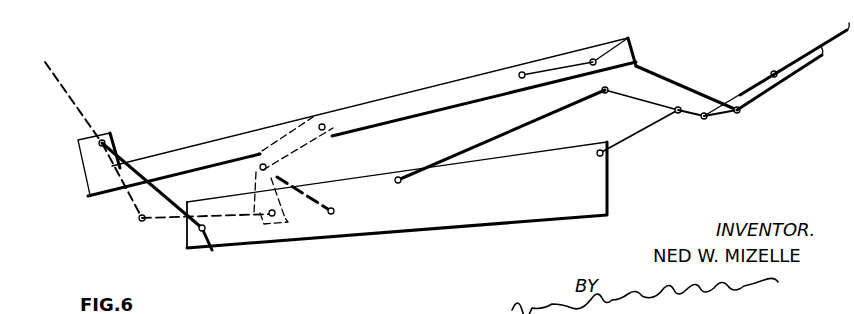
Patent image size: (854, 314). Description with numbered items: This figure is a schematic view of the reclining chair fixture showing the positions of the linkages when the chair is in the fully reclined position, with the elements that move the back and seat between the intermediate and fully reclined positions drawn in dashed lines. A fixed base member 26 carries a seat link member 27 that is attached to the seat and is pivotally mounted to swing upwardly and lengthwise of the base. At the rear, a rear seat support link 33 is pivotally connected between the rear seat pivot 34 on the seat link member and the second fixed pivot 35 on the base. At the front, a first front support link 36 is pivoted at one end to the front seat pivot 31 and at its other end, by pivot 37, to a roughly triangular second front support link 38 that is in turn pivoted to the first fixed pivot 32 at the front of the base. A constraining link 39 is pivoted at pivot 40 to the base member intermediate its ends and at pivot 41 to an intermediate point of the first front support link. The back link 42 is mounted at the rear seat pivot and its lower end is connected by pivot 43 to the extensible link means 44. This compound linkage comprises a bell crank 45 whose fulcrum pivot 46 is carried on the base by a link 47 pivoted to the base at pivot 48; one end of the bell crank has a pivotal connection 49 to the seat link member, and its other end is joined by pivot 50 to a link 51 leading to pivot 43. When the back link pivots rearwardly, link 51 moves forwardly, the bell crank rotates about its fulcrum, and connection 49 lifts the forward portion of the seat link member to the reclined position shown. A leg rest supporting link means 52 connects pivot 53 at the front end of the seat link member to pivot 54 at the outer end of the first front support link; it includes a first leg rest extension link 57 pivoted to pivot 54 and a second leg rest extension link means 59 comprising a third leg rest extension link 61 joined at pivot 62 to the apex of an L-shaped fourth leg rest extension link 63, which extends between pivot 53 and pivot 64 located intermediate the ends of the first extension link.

The base member 26 is at (466, 220).
The seat link member 27 is at (468, 86).
The front seat pivot 31 is at (523, 73).
The first fixed pivot 32 is at (600, 153).
The rear seat support link 33 is at (154, 166).
The rear seat pivot 34 is at (102, 142).
The second fixed pivot 35 is at (203, 231).
The first front support link 36 is at (639, 100).
The pivot 37 is at (678, 110).
The second front support link 38 is at (643, 130).
The constraining link 39 is at (499, 138).
The pivot 40 is at (398, 180).
The pivot 41 is at (605, 90).
The back link 42 is at (106, 157).
The pivot 43 is at (142, 220).
The extensible link means 44 is at (241, 207).
The bell crank 45 is at (287, 142).
The pivot 46 is at (263, 165).
The link 47 is at (285, 178).
The pivot 48 is at (331, 214).
The pivotal connection 49 is at (322, 125).
The pivot 50 is at (273, 216).
The link 51 is at (165, 219).
The leg rest supporting link means 52 is at (692, 130).
The pivot 53 is at (593, 60).
The pivot 54 is at (705, 119).
The first leg rest extension link 57 is at (796, 62).
The second leg rest extension link means 59 is at (714, 92).
The third leg rest extension link 61 is at (762, 89).
The pivot 62 is at (737, 113).
The fourth leg rest extension link 63 is at (720, 97).
The pivot 64 is at (774, 74).